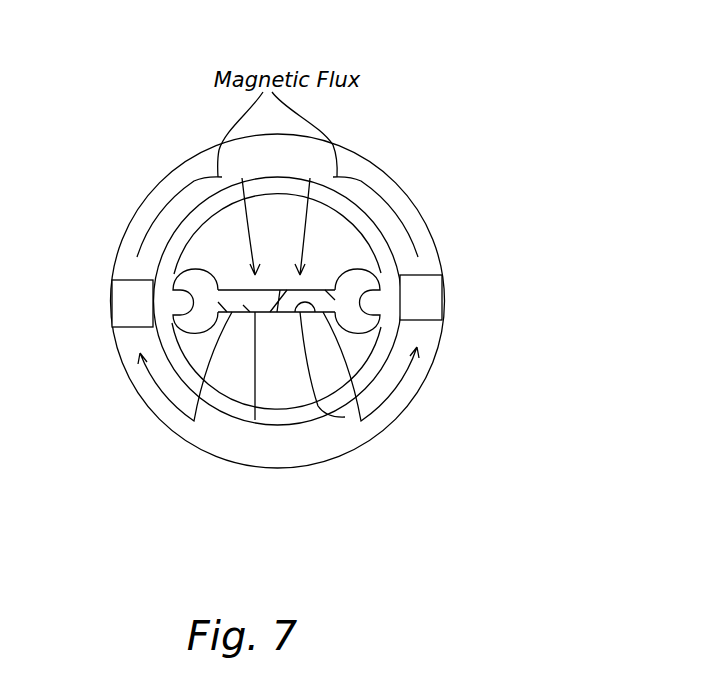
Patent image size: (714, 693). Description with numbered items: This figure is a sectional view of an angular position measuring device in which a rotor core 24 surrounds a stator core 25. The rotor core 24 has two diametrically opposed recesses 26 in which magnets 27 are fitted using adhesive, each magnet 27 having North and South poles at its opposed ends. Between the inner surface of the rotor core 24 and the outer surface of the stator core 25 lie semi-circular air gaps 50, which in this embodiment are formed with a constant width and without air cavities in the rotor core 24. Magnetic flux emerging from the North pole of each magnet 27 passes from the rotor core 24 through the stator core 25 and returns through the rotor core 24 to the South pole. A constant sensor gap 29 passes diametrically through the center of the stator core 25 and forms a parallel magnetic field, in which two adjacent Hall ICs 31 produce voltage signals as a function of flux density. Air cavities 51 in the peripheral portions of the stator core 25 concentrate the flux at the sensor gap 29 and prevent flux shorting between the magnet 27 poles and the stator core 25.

The rotor core 24 is at (320, 443).
The stator core 25 is at (220, 247).
The recess 26 is at (112, 321).
The magnet 27 is at (112, 298).
The sensor gap 29 is at (358, 324).
The Hall IC 31 is at (312, 290).
The air gap 50 is at (252, 417).
The air cavity 51 is at (176, 258).